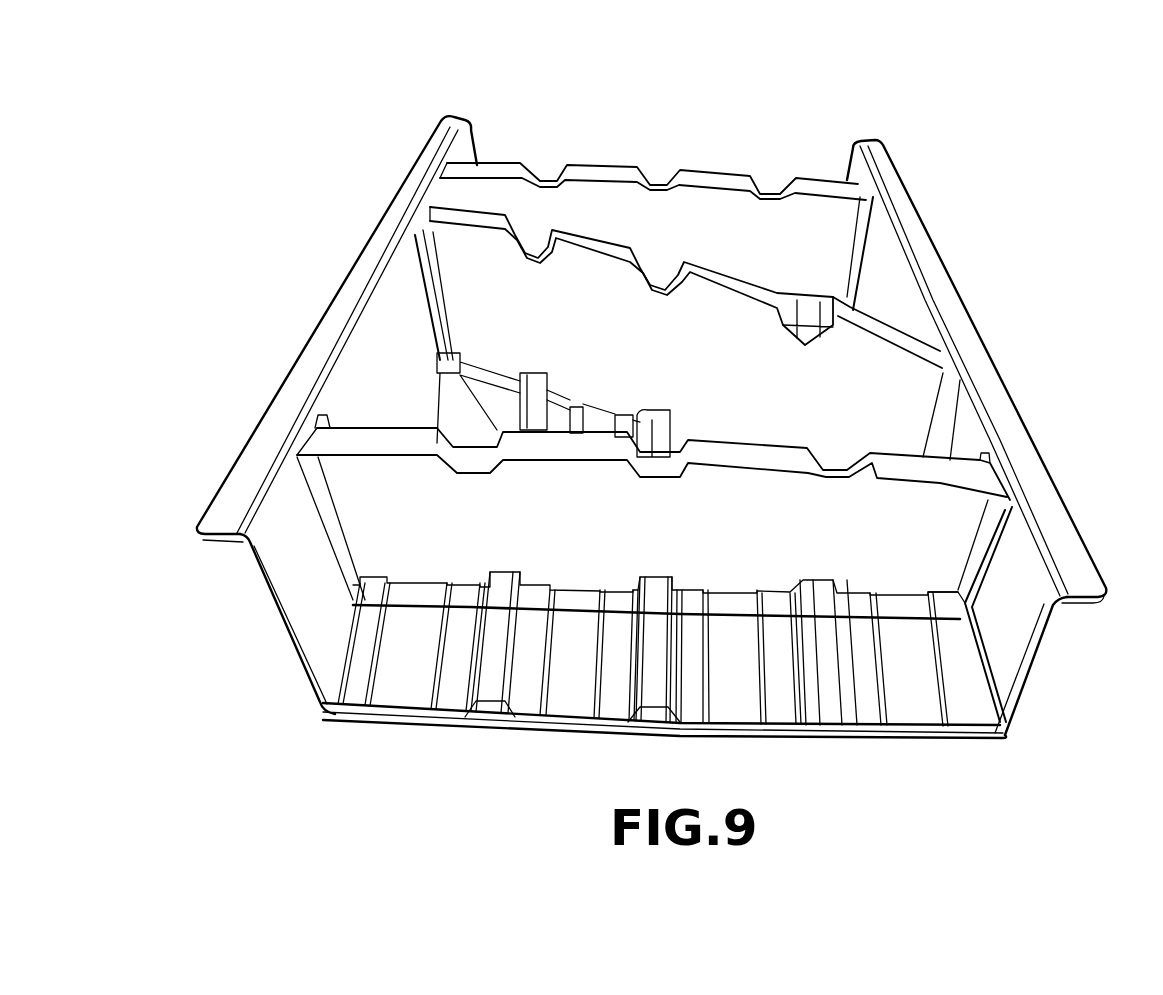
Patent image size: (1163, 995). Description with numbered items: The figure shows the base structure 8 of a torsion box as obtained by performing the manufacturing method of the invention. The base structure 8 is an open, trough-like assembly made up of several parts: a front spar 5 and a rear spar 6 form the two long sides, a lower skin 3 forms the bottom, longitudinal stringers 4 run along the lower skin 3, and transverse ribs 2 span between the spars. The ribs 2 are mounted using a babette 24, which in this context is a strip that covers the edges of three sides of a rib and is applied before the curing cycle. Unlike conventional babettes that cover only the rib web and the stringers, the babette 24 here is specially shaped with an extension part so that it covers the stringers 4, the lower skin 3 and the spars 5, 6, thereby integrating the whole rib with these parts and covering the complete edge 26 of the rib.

The base structure 8 is at (620, 110).
The rear spar 6 is at (352, 320).
The front spar 5 is at (997, 410).
The ribs 2 is at (893, 178).
The babette 24 is at (408, 235).
The complete edge 26 is at (970, 578).
The lower skin 3 is at (943, 737).
The stringers 4 is at (483, 660).